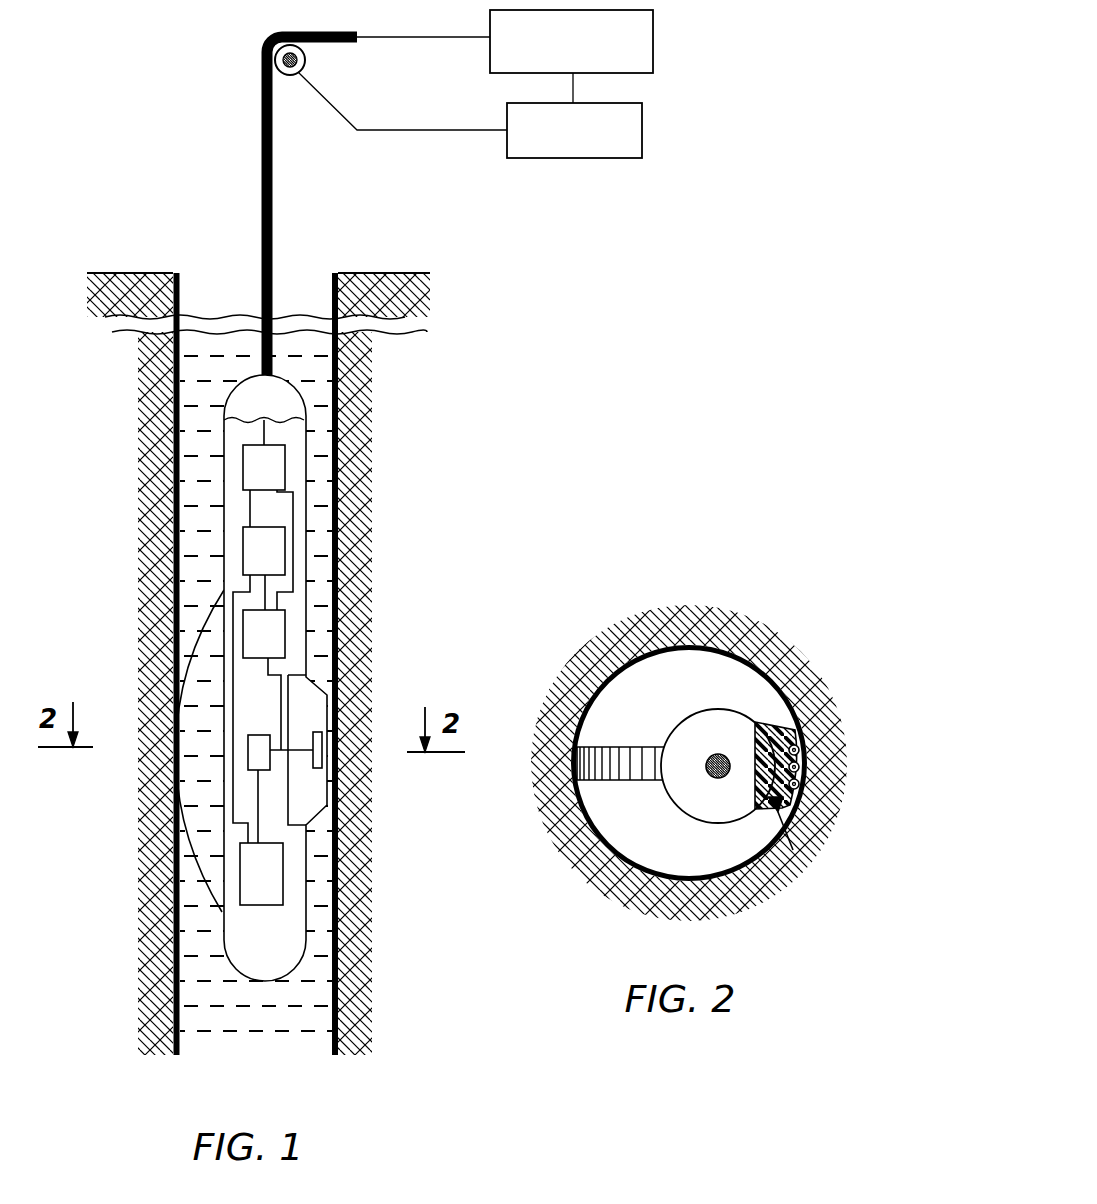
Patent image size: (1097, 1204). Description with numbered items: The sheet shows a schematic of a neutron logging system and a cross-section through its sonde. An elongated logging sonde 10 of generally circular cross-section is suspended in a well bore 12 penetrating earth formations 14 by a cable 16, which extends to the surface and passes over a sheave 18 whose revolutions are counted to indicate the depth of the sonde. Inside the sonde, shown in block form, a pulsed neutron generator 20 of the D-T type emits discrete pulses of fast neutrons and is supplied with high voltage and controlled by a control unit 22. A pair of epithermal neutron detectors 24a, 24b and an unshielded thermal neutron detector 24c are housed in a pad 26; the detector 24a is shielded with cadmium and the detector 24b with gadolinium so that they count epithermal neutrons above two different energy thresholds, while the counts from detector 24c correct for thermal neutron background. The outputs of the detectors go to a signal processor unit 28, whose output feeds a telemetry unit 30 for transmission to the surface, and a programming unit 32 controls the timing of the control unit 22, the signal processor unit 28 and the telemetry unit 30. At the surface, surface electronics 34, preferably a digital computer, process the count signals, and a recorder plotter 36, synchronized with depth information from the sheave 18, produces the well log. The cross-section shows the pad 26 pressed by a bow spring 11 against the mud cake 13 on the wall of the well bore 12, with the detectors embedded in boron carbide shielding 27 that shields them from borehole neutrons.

In FIG. 1, the logging sonde 10 is at (302, 947).
In FIG. 2, the logging sonde 10 is at (712, 805).
In FIG. 1, the bow spring 11 is at (187, 633).
In FIG. 2, the bow spring 11 is at (627, 782).
In FIG. 1, the well bore 12 is at (298, 1045).
In FIG. 2, the well bore 12 is at (655, 670).
In FIG. 2, the mud cake 13 is at (697, 648).
In FIG. 1, the earth formations 14 is at (430, 634).
In FIG. 1, the cable 16 is at (276, 208).
In FIG. 1, the sheave 18 is at (293, 77).
In FIG. 1, the pulsed neutron generator 20 is at (263, 750).
In FIG. 1, the neutron generator control unit 22 is at (272, 878).
In FIG. 1, the epithermal neutron detector 24a is at (322, 758).
In FIG. 2, the epithermal neutron detector 24a is at (803, 750).
In FIG. 2, the epithermal neutron detector 24b is at (803, 786).
In FIG. 2, the thermal neutron detector 24c is at (803, 767).
In FIG. 1, the pad 26 is at (313, 700).
In FIG. 2, the pad 26 is at (790, 727).
In FIG. 2, the shielding 27 is at (787, 848).
In FIG. 1, the signal processor unit 28 is at (275, 633).
In FIG. 1, the telemetry unit 30 is at (280, 548).
In FIG. 1, the programming unit 32 is at (255, 470).
In FIG. 1, the surface electronics 34 is at (653, 42).
In FIG. 1, the recorder plotter 36 is at (642, 133).